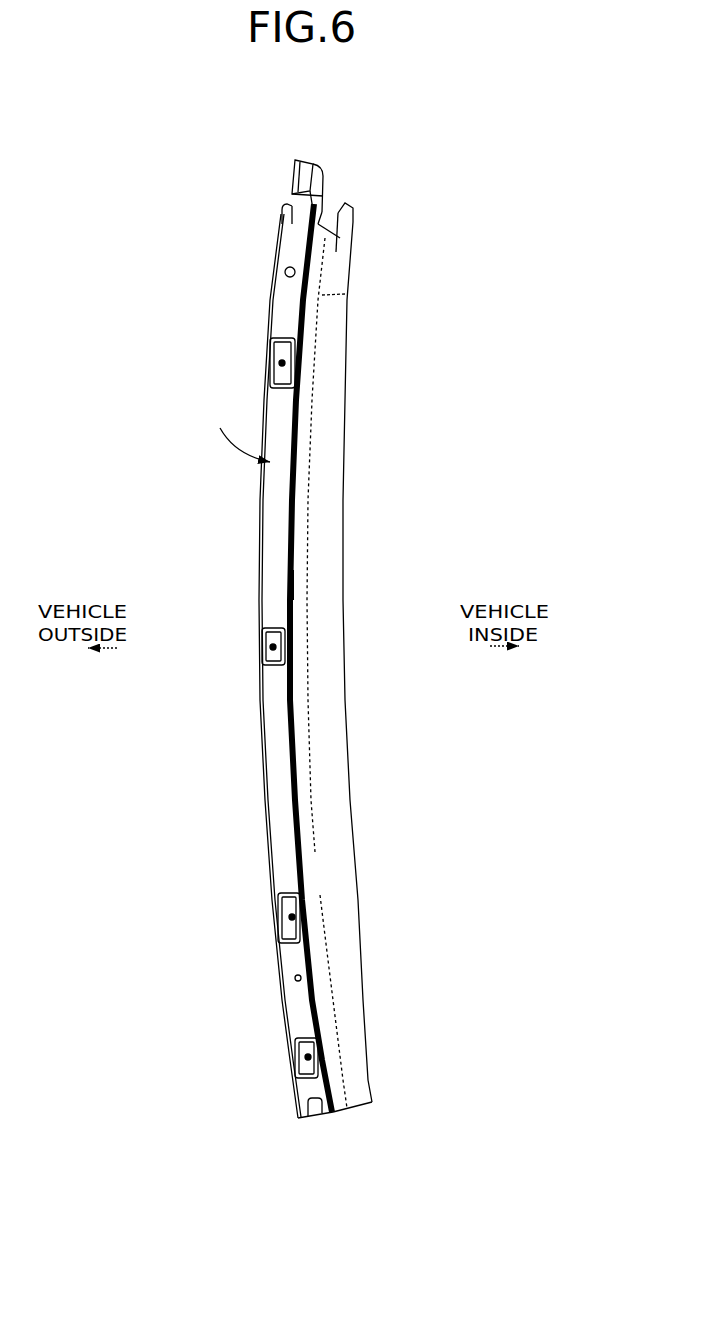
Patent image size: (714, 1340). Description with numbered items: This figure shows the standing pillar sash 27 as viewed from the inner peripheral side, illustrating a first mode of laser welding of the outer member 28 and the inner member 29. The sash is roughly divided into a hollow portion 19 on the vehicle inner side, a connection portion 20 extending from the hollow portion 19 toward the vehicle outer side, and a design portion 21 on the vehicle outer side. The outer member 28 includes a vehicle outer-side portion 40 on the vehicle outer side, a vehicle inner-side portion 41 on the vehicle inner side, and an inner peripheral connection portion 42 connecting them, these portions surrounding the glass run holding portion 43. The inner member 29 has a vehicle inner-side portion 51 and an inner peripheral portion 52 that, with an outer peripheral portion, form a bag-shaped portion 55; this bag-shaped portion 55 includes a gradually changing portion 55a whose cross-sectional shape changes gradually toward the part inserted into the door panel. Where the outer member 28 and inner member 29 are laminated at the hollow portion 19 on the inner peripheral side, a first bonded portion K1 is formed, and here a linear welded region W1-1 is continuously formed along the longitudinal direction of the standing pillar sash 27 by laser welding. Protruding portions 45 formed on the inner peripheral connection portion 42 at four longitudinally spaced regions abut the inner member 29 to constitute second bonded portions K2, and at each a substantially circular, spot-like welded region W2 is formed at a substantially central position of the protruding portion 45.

The standing pillar sash 27 is at (377, 174).
The outer member 28 is at (268, 289).
The inner member 29 is at (362, 257).
The vehicle outer-side portion 40 is at (221, 666).
The vehicle inner-side portion 41 is at (242, 658).
The inner peripheral connection portion 42 is at (223, 665).
The glass run holding portion 43 is at (240, 433).
The protruding portion 45 is at (237, 705).
The vehicle inner-side portion 51 is at (345, 462).
The inner peripheral portion 52 is at (335, 432).
The bag-shaped portion 55 is at (408, 426).
The gradually changing portion 55a is at (353, 928).
The linear welded region W1-1 is at (300, 583).
The welded region W2 is at (272, 362).
The first bonded portion K1 is at (337, 1120).
The second bonded portion K2 is at (270, 350).
The hollow portion 19 is at (290, 758).
The connection portion 20 is at (272, 540).
The design portion 21 is at (262, 490).